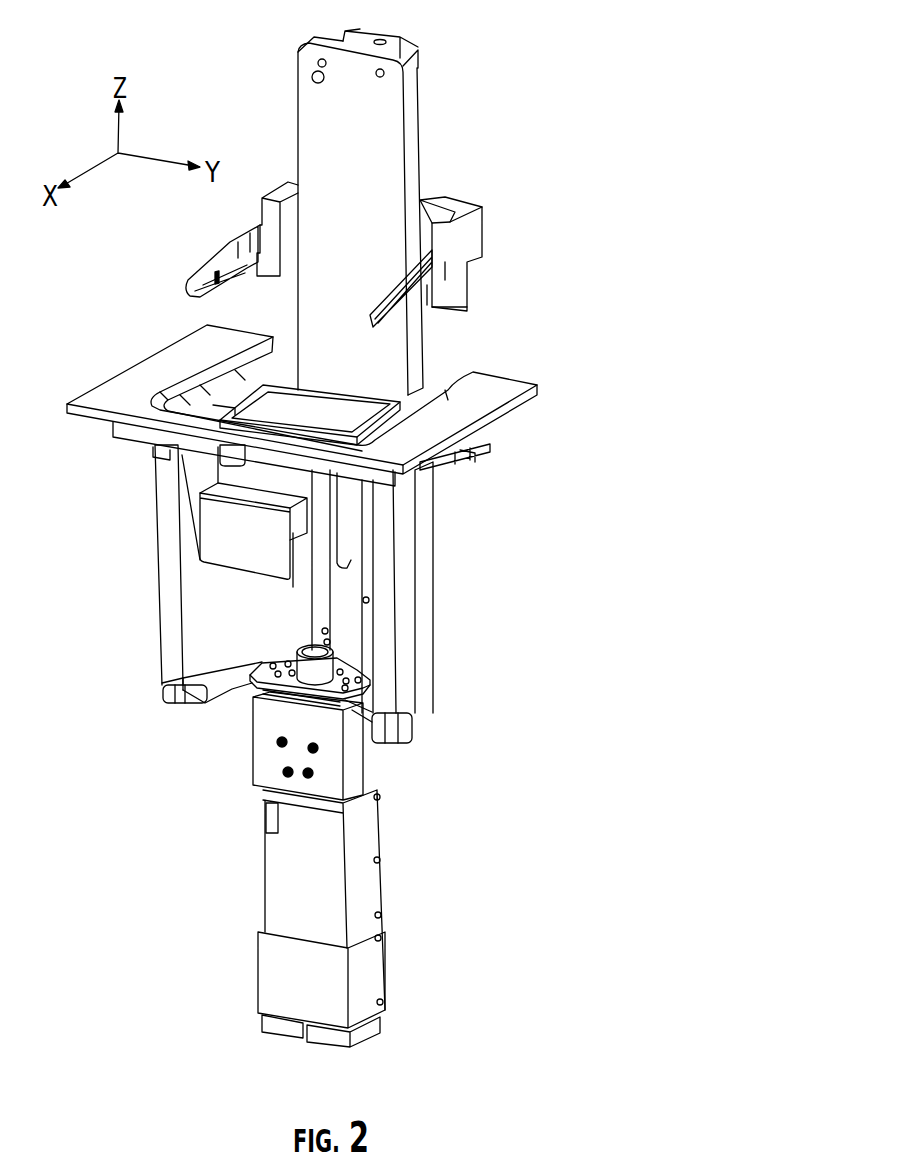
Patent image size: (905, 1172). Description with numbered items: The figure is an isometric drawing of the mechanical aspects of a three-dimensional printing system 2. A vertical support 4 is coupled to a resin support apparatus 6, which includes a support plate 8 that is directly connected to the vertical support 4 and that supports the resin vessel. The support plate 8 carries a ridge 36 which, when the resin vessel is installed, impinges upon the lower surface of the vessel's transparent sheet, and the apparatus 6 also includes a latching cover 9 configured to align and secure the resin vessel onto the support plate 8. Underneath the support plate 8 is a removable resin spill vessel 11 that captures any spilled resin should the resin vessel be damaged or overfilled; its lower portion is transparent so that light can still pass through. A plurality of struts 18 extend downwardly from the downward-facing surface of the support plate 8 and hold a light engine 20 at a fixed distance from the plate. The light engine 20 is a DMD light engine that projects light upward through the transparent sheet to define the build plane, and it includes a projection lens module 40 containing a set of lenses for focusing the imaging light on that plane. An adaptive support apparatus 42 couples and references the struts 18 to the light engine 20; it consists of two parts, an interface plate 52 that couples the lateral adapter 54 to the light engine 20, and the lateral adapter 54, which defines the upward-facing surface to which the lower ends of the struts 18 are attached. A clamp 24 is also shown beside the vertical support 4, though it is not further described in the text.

The system 2 is at (470, 78).
The vertical support 4 is at (410, 132).
The clamp 24 is at (470, 231).
The ridge 36 is at (405, 372).
The latching cover 9 is at (124, 382).
The resin support apparatus 6 is at (518, 428).
The support plate 8 is at (437, 473).
The struts 18 is at (165, 501).
The resin spill vessel 11 is at (330, 545).
The interface plate 52 is at (262, 663).
The projection lens module 40 is at (337, 663).
The lateral adapter 54 is at (207, 698).
The adaptive support apparatus 42 is at (428, 713).
The light engine 20 is at (428, 855).